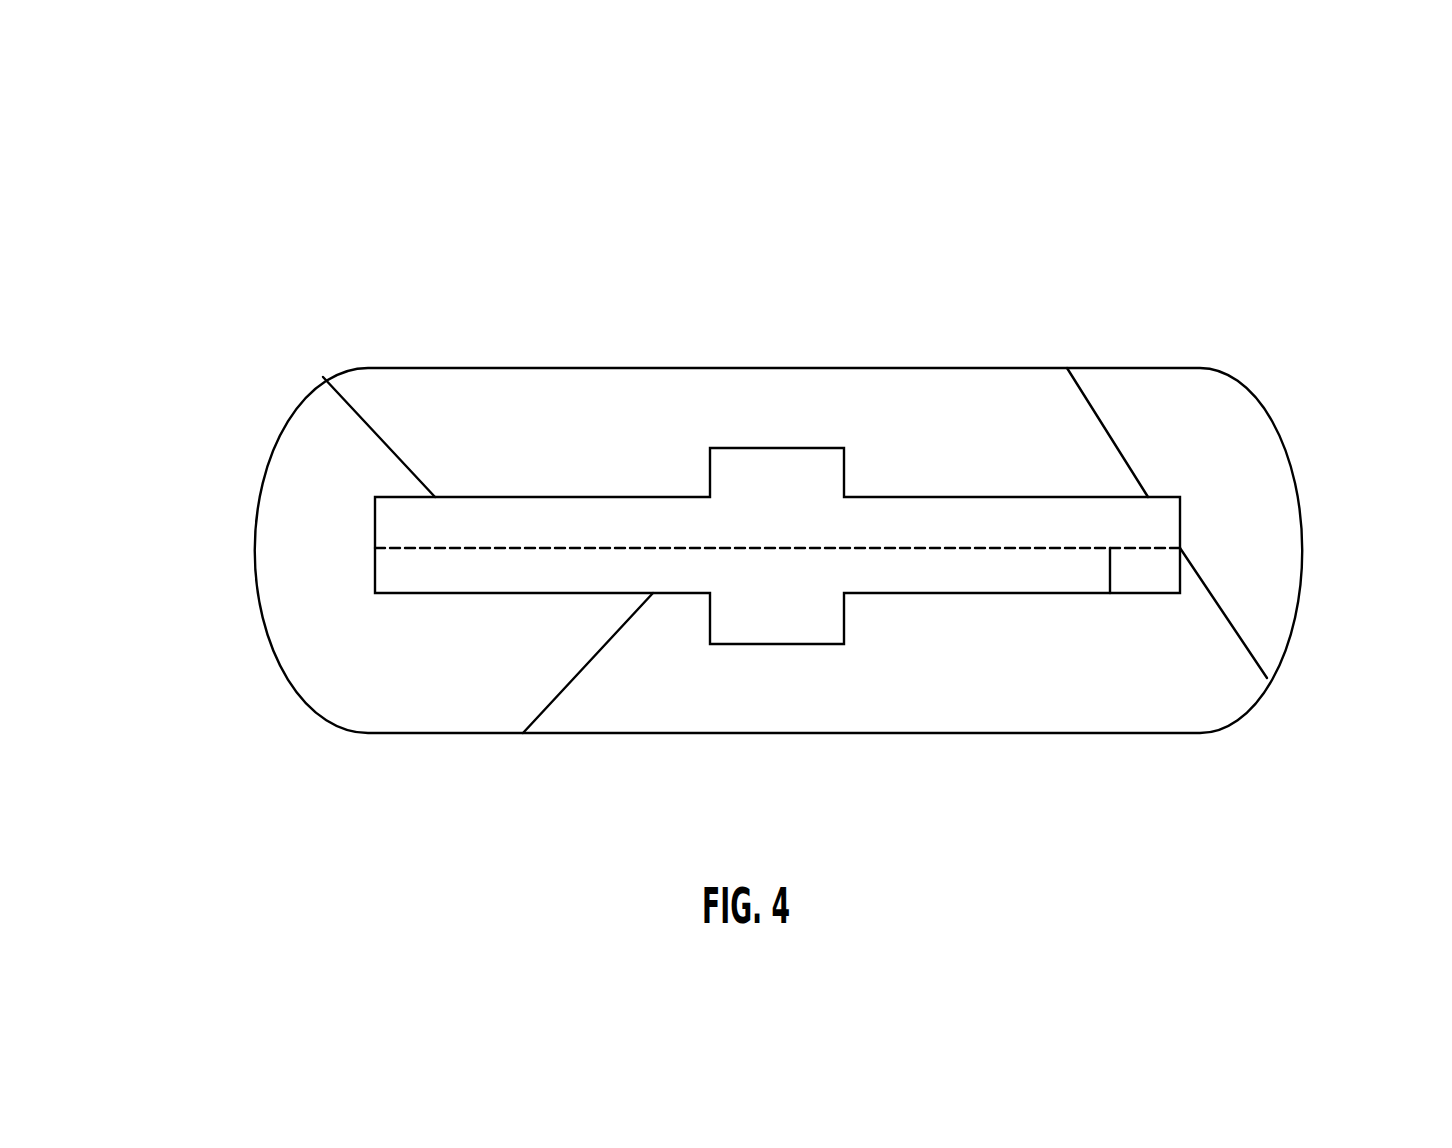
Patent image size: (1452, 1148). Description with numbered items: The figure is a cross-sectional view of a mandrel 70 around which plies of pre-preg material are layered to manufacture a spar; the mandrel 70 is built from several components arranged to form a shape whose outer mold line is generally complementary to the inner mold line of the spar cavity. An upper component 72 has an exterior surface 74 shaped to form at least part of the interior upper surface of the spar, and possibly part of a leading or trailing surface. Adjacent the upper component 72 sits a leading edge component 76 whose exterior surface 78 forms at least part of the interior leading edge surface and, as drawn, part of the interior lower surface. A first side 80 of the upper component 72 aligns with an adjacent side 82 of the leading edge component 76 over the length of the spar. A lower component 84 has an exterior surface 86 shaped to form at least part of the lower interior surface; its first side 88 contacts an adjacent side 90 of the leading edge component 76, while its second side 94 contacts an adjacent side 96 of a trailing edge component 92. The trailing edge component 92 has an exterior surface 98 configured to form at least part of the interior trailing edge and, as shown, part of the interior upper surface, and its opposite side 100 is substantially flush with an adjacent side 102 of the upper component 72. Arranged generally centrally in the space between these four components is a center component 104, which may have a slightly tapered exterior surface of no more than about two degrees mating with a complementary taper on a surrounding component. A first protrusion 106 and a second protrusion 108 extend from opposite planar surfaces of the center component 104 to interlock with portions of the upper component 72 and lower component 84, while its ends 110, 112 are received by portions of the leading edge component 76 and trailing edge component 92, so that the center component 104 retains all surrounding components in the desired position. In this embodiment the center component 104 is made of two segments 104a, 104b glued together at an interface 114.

The mandrel 70 is at (230, 128).
The upper component 72 is at (588, 413).
The exterior surface 74 is at (667, 368).
The leading edge component 76 is at (320, 600).
The exterior surface 78 is at (255, 548).
The first side 80 is at (393, 413).
The adjacent side 82 is at (350, 453).
The lower component 84 is at (997, 677).
The exterior surface 86 is at (875, 730).
The first side 88 is at (588, 707).
The adjacent side 90 is at (490, 707).
The trailing edge component 92 is at (1242, 480).
The second side 94 is at (1213, 690).
The adjacent side 96 is at (1257, 625).
The exterior surface 98 is at (1292, 462).
The opposite side 100 is at (1120, 390).
The adjacent side 102 is at (1060, 407).
The center component 104 is at (515, 497).
The segment 104a is at (957, 520).
The segment 104b is at (425, 593).
The first protrusion 106 is at (782, 480).
The second protrusion 108 is at (773, 622).
The end 110 is at (402, 522).
The end 112 is at (1173, 522).
The interface 114 is at (1110, 593).